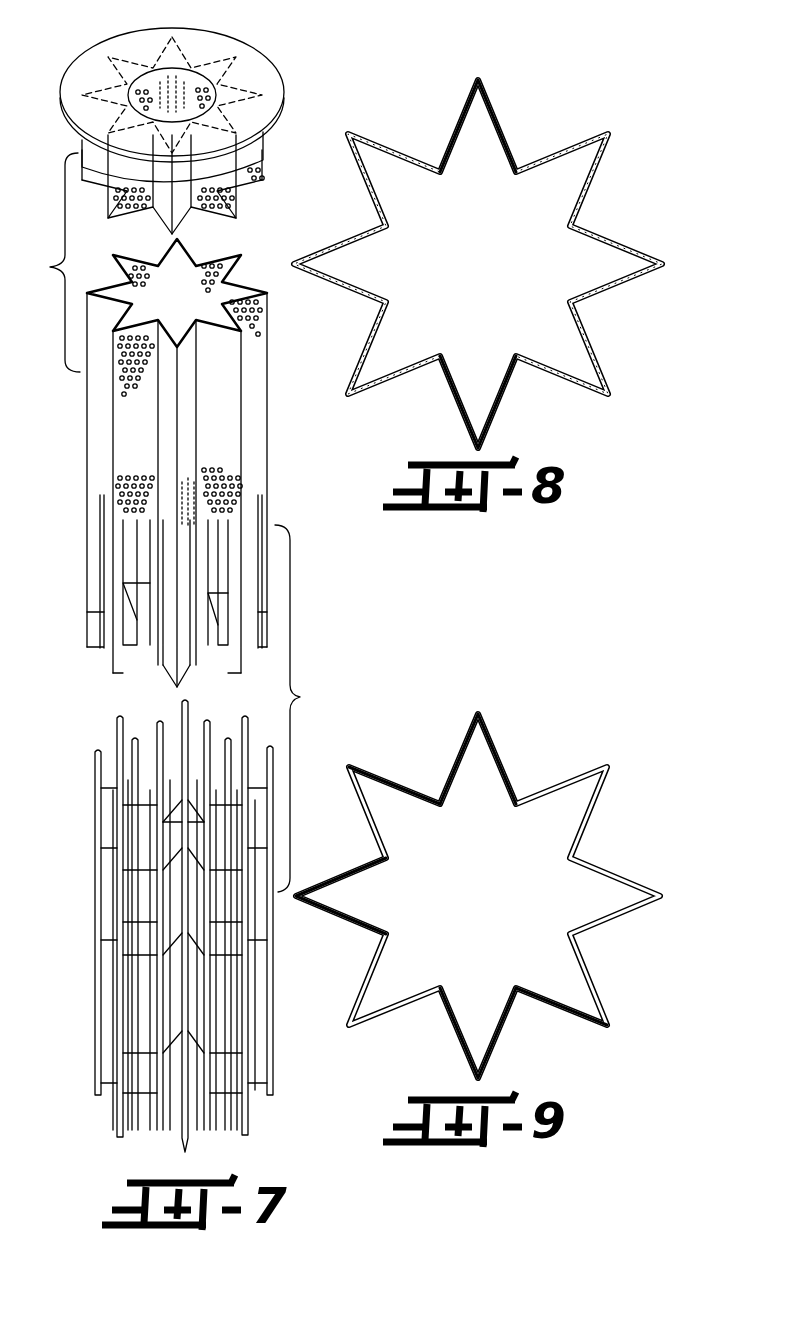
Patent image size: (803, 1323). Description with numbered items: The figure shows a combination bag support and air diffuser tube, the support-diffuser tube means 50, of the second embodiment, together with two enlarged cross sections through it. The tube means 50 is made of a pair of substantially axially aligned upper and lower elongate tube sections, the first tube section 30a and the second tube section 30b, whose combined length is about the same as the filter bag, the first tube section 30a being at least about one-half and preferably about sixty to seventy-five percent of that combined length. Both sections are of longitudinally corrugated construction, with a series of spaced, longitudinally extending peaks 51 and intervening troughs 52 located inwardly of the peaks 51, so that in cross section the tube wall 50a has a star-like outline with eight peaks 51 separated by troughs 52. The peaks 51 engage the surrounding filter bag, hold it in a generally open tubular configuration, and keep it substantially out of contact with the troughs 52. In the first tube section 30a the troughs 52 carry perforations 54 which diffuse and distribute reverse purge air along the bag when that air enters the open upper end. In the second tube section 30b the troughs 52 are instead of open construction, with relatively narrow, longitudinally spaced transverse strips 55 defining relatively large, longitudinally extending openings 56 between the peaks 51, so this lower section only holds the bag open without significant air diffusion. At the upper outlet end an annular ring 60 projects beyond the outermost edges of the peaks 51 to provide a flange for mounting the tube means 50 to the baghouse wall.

In FIG. 7, the first tube section 30a is at (78, 388).
In FIG. 7, the second tube section 30b is at (90, 954).
In FIG. 7, the support-diffuser tube means 50 is at (83, 437).
In FIG. 8, the support-diffuser tube means 50 is at (490, 78).
In FIG. 9, the support-diffuser tube means 50 is at (478, 874).
In FIG. 8, the star-shaped tube wall 50a is at (478, 264).
In FIG. 8, the peaks 51 is at (608, 136).
In FIG. 9, the peaks 51 is at (478, 712).
In FIG. 8, the troughs 52 is at (434, 362).
In FIG. 9, the troughs 52 is at (486, 970).
In FIG. 7, the perforations 54 is at (162, 206).
In FIG. 8, the perforations 54 is at (456, 134).
In FIG. 7, the transverse strips 55 is at (173, 998).
In FIG. 9, the transverse strips 55 is at (366, 822).
In FIG. 7, the openings 56 is at (127, 900).
In FIG. 9, the openings 56 is at (362, 942).
In FIG. 7, the annular ring 60 is at (218, 166).